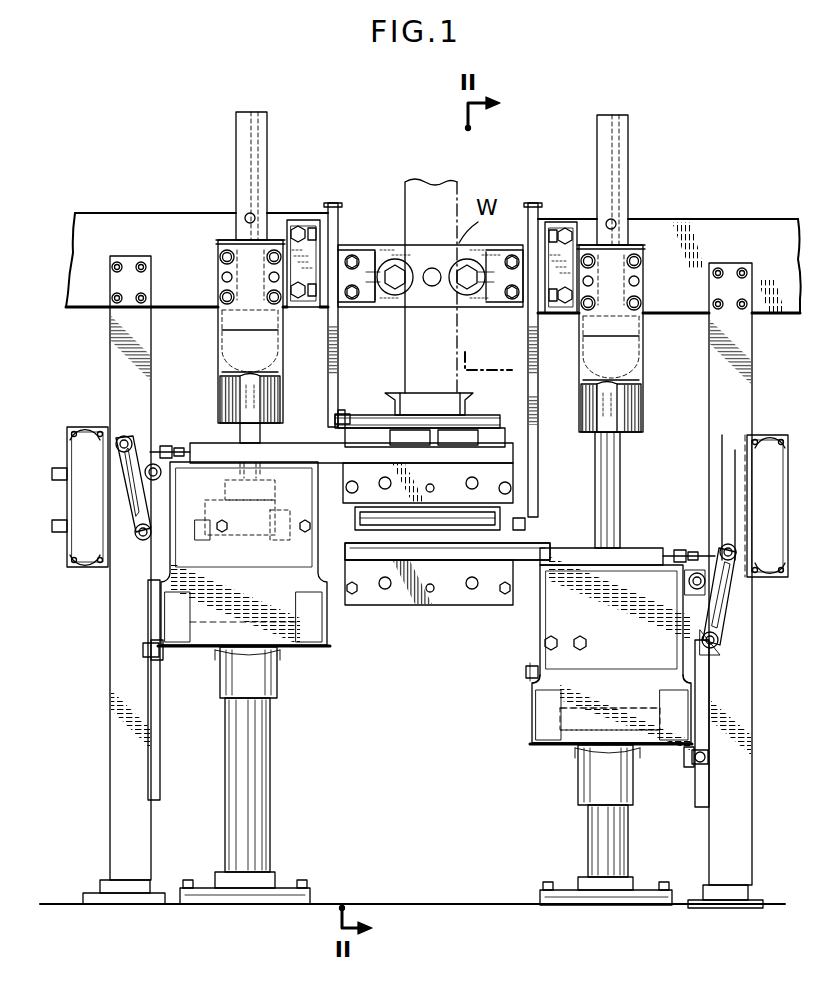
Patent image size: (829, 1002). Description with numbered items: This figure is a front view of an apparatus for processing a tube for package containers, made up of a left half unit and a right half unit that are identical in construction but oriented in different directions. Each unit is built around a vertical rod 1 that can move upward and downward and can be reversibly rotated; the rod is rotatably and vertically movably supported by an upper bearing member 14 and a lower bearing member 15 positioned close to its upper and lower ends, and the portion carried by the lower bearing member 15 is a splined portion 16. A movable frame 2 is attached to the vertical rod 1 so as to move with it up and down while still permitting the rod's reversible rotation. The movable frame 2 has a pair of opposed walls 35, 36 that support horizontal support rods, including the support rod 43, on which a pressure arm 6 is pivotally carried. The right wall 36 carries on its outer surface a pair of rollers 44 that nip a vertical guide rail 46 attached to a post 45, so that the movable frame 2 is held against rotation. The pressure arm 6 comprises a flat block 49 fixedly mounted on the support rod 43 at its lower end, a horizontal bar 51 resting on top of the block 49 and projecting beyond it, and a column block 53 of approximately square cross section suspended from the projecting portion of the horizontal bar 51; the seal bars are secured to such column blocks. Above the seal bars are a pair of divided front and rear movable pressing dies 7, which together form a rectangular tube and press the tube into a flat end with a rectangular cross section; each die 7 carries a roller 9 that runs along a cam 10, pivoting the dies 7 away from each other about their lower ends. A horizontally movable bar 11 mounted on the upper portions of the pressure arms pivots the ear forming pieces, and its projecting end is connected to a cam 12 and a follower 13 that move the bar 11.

The vertical rod 1 is at (262, 437).
The movable frame 2 is at (301, 652).
The pressure arm 6 is at (522, 672).
The movable pressing die 7 is at (430, 400).
The roller 9 is at (345, 400).
The cam 10 is at (320, 386).
The horizontally movable bar 11 is at (186, 445).
The cam 12 is at (120, 540).
The follower 13 is at (125, 440).
The upper bearing member 14 is at (218, 375).
The lower bearing member 15 is at (275, 872).
The splined portion 16 is at (270, 763).
The opposed wall 35 is at (545, 745).
The right wall 36 is at (678, 697).
The horizontal support rod 43 is at (570, 750).
The roller 44 is at (143, 650).
The post 45 is at (110, 700).
The vertical guide rail 46 is at (155, 750).
The block 49 is at (540, 680).
The horizontal bar 51 is at (372, 555).
The column block 53 is at (413, 593).